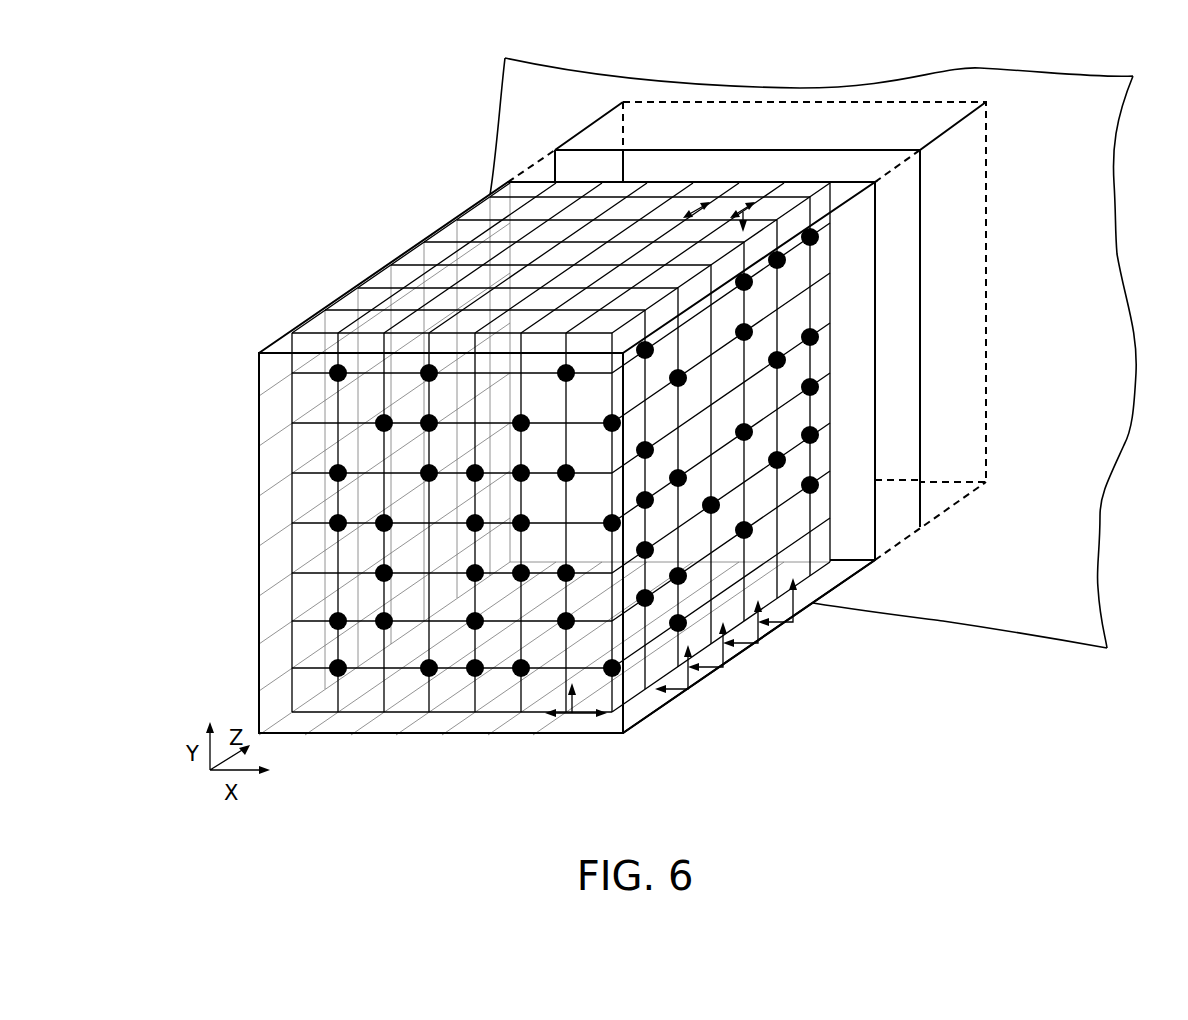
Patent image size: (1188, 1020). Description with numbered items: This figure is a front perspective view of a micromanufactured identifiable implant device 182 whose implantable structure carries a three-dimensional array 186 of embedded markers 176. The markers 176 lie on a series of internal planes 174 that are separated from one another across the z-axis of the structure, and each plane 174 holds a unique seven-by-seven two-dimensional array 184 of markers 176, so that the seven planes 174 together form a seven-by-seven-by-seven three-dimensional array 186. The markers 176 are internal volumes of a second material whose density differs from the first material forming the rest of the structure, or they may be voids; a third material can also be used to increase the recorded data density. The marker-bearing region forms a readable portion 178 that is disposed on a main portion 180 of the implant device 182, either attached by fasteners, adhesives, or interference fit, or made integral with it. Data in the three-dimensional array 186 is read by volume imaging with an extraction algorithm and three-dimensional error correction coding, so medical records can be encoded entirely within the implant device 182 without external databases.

The internal planes 174 is at (775, 623).
The embedded markers 176 is at (384, 522).
The readable portion 178 is at (824, 611).
The main portion 180 is at (969, 590).
The implant device 182 is at (1052, 694).
The two-dimensional array 184 is at (306, 587).
The three-dimensional array 186 is at (368, 270).